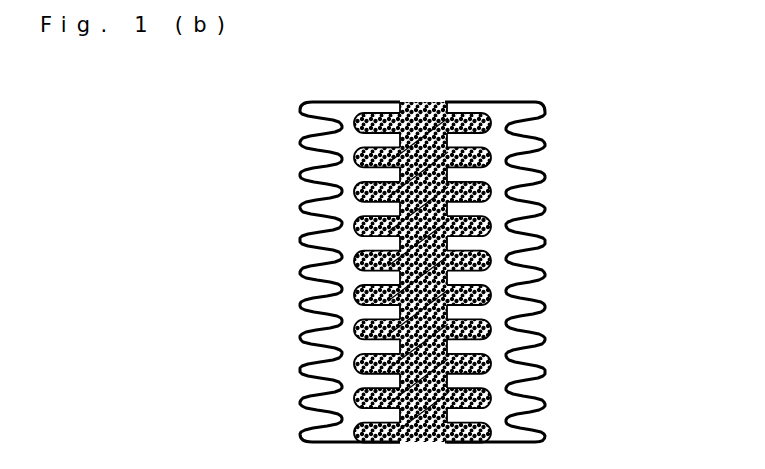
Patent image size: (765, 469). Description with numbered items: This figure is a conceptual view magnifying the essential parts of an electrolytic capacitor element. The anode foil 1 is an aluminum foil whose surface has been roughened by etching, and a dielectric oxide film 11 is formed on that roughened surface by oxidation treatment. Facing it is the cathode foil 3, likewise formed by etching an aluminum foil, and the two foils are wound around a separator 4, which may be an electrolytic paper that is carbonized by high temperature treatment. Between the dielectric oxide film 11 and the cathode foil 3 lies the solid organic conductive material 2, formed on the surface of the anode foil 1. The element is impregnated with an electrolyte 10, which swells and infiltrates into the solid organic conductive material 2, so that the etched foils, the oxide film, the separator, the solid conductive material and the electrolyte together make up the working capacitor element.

The anode foil 1 is at (328, 110).
The dielectric oxide film 11 is at (383, 153).
The solid organic conductive material 2 is at (440, 260).
The cathode foil 3 is at (497, 212).
The separator 4 is at (440, 154).
The electrolyte 10 is at (465, 417).